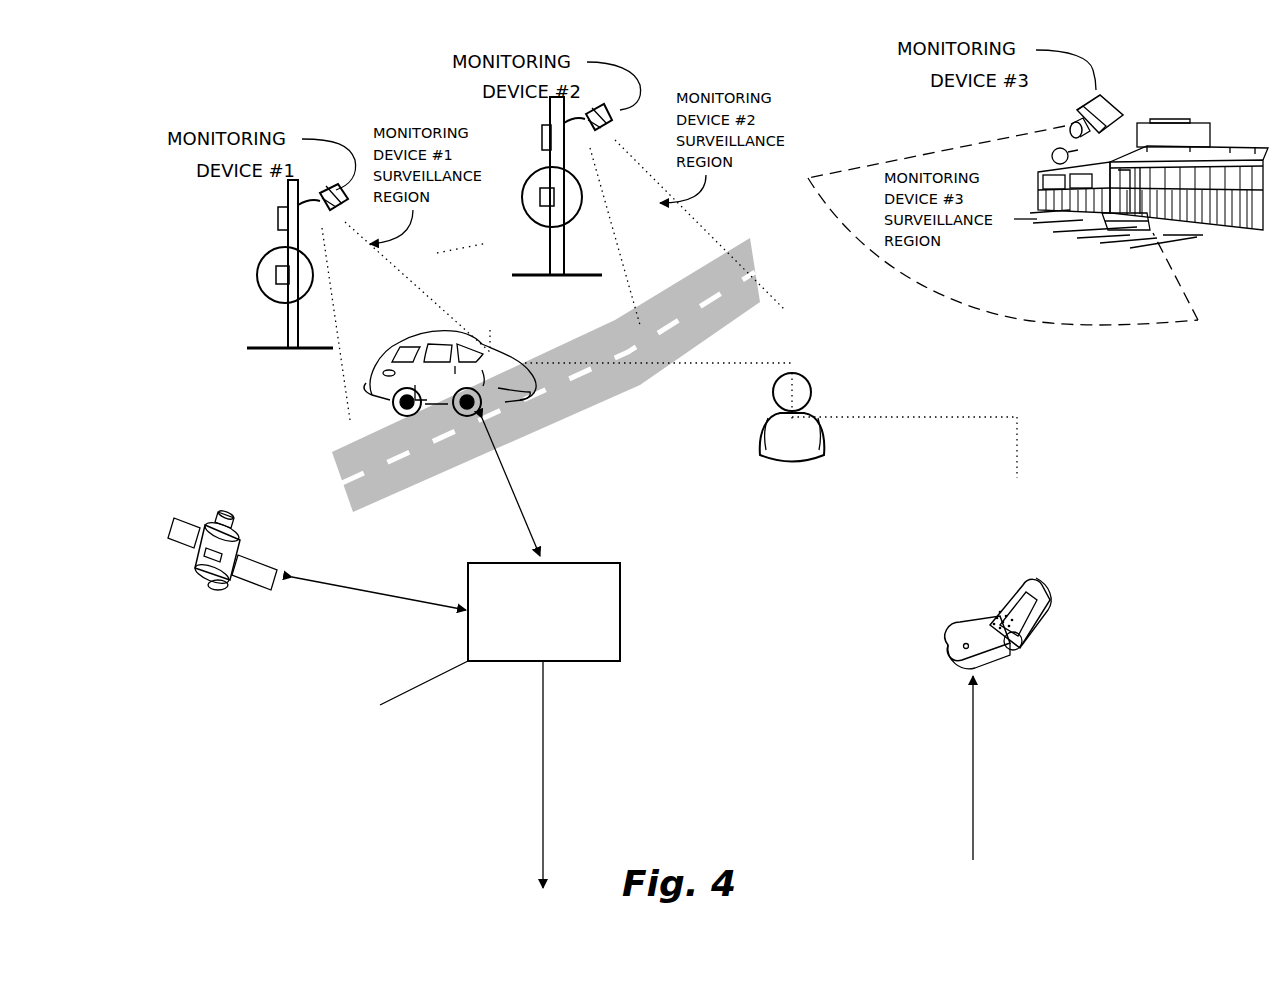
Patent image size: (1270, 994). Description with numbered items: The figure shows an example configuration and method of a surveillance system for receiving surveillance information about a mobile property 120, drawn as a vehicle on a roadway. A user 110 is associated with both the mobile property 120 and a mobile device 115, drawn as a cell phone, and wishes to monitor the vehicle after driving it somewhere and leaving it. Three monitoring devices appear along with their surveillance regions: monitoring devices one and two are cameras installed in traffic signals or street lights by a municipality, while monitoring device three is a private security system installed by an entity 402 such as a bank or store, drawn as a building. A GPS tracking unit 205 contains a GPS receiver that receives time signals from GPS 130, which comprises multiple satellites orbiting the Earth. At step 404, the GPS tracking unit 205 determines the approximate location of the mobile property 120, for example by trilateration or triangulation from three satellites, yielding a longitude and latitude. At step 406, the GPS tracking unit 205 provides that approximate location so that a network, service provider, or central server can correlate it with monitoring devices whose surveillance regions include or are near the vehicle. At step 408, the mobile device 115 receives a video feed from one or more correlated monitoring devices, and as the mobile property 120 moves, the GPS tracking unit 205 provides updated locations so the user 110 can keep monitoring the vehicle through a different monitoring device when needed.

The user 110 is at (879, 432).
The mobile device 115 is at (1020, 635).
The mobile property 120 is at (378, 385).
The GPS 130 is at (317, 569).
The GPS tracking unit 205 is at (544, 539).
The entity 402 is at (1225, 230).
The determining the approximate location 404 is at (380, 705).
The providing the approximate location 406 is at (543, 813).
The receiving a video feed 408 is at (973, 720).